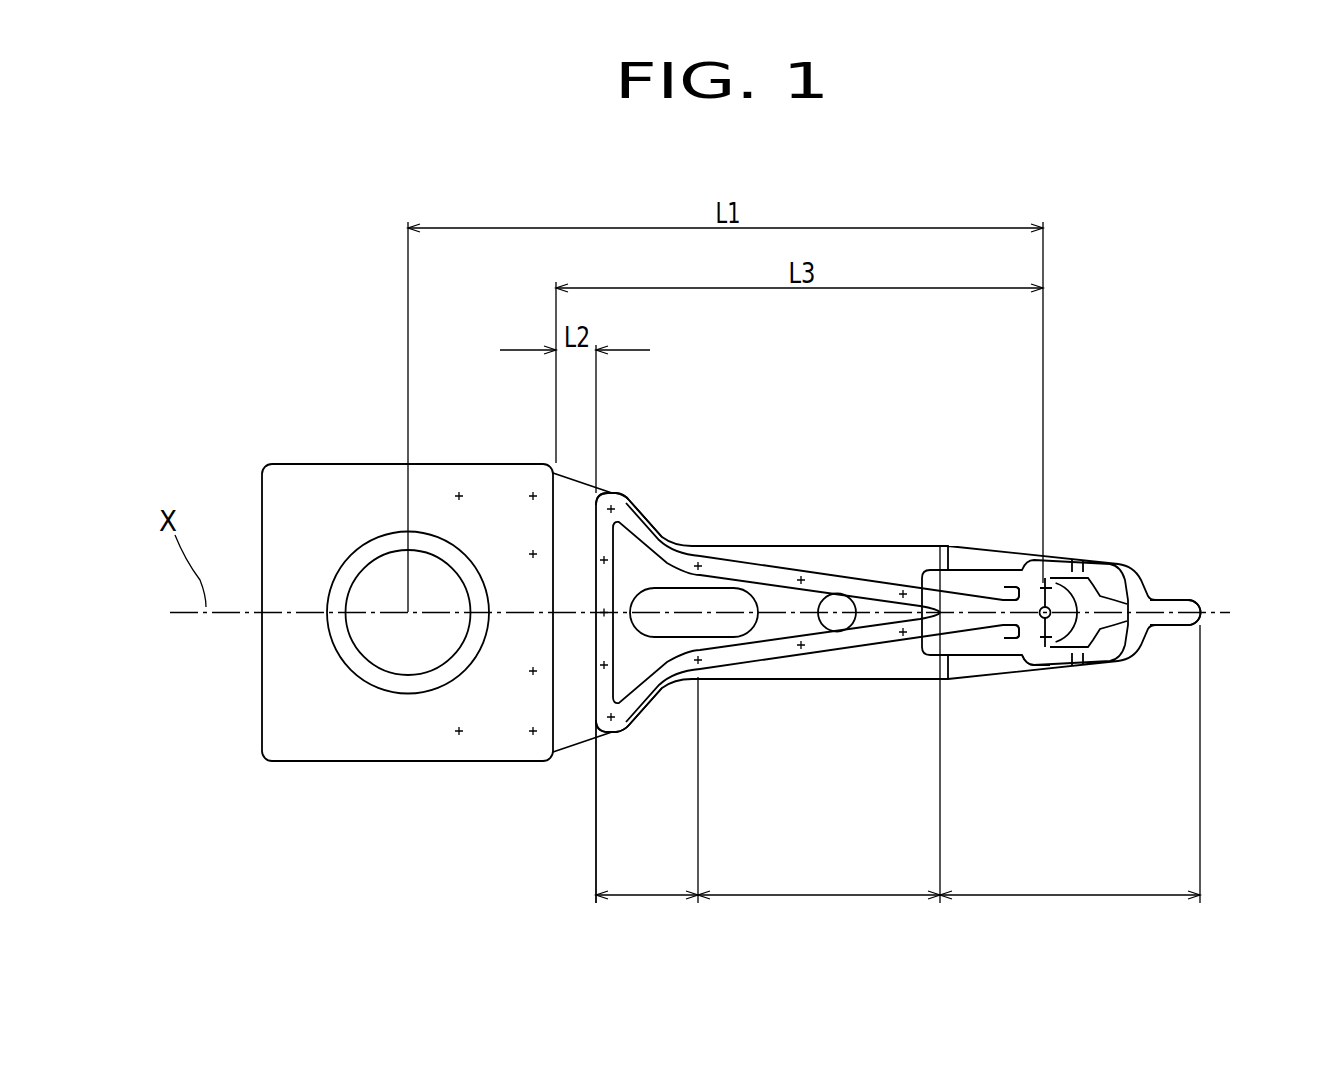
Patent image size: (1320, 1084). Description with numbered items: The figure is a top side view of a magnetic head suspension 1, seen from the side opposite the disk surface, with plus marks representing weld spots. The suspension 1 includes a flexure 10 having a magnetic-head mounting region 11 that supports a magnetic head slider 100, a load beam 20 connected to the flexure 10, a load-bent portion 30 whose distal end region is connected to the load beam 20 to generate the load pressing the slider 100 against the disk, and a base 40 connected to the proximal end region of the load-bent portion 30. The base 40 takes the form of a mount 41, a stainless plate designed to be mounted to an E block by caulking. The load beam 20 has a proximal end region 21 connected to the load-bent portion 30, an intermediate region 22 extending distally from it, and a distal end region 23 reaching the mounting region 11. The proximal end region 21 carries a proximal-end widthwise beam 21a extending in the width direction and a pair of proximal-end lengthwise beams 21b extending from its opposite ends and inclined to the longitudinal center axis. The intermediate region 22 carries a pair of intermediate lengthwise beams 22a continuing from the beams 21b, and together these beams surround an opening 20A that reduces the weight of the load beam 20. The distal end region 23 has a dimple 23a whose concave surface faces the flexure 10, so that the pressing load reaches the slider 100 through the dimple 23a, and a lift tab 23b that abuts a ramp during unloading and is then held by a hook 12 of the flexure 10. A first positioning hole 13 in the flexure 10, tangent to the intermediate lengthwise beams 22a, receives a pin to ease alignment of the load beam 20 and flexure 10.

The magnetic head suspension 1 is at (1082, 454).
The flexure 10 is at (955, 525).
The magnetic-head mounting region 11 is at (1097, 625).
The hook 12 is at (1033, 655).
The first positioning hole 13 is at (863, 635).
The load beam 20 is at (982, 637).
The opening 20A is at (625, 583).
The proximal end region 21 is at (647, 811).
The proximal-end widthwise beam 21a is at (625, 642).
The proximal-end lengthwise beams 21b is at (657, 528).
The intermediate region 22 is at (819, 790).
The intermediate lengthwise beams 22a is at (770, 572).
The distal end region 23 is at (1070, 724).
The dimple 23a is at (1067, 603).
The lift tab 23b is at (1187, 608).
The load-bent portion 30 is at (632, 472).
The base 40 is at (401, 549).
The mount 41 is at (339, 439).
The magnetic head slider 100 is at (1010, 588).